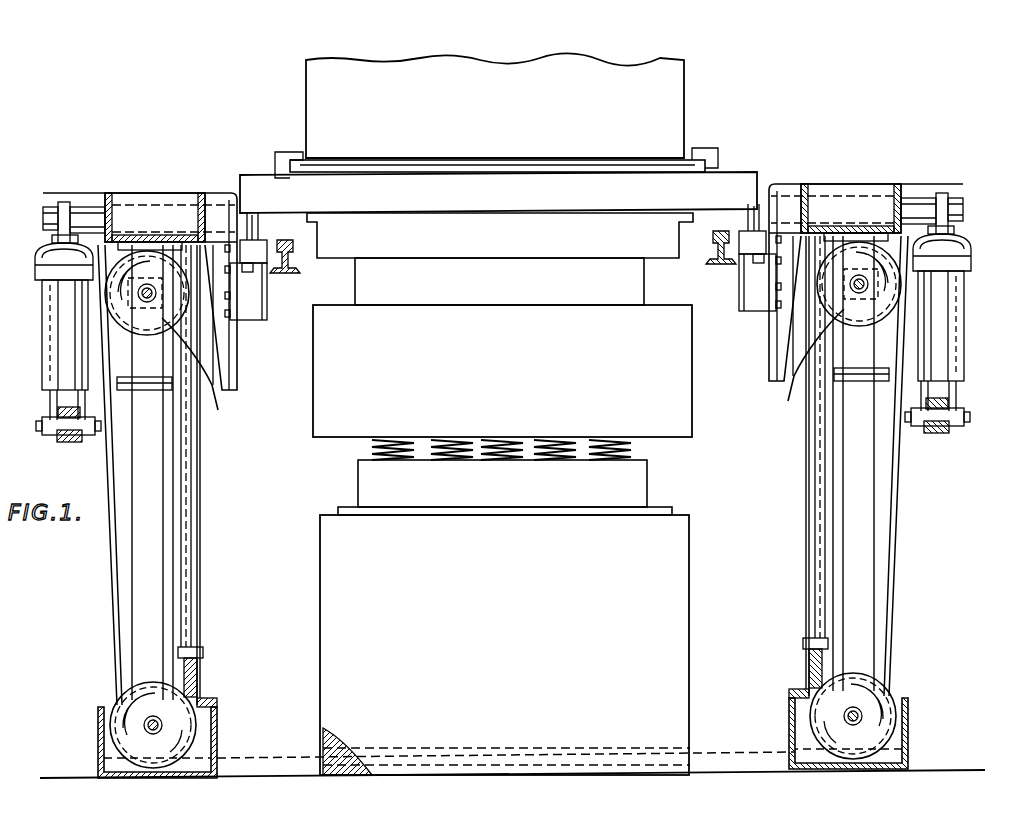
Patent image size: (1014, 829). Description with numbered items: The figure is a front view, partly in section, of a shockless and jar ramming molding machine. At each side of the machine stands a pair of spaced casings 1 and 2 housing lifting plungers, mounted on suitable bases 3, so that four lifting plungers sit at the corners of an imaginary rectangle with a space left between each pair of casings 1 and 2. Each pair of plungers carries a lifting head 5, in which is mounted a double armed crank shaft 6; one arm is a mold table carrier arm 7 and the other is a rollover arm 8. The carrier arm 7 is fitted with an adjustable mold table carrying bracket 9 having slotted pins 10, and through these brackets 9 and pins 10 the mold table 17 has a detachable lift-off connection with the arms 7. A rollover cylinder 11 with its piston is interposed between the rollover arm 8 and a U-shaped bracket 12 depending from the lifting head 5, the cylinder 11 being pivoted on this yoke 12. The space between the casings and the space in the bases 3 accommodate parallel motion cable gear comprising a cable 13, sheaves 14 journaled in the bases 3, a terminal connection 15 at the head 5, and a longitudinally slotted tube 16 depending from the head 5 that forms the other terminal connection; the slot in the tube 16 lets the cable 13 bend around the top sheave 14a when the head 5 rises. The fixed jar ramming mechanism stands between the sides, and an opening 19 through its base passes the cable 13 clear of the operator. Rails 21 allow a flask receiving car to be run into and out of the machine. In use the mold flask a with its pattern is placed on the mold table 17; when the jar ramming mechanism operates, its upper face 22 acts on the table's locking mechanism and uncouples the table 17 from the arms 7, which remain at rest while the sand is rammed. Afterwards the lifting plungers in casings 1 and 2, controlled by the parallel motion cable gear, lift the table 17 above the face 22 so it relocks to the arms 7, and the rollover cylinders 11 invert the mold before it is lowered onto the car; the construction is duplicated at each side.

The casing of lifting plunger 1 is at (132, 538).
The casing of lifting plunger 2 is at (866, 530).
The base 3 is at (100, 715).
The lifting head 5 is at (106, 198).
The double armed crank shaft 6 is at (172, 208).
The mold table carrier arm 7 is at (237, 360).
The rollover arm 8 is at (90, 205).
The adjustable mold table carrying bracket 9 is at (262, 303).
The slotted pin 10 is at (258, 232).
The rollover cylinder 11 is at (45, 328).
The U-shaped bracket 12 is at (68, 440).
The cable 13 is at (110, 592).
The sheave 14 is at (178, 700).
The top sheave 14a is at (822, 300).
The terminal connection 15 is at (56, 262).
The longitudinally slotted tube 16 is at (200, 540).
The mold table 17 is at (498, 180).
The opening 19 is at (330, 750).
The rail 21 is at (300, 272).
The face of jar ramming machine 22 is at (578, 190).
The mold flask a is at (495, 105).